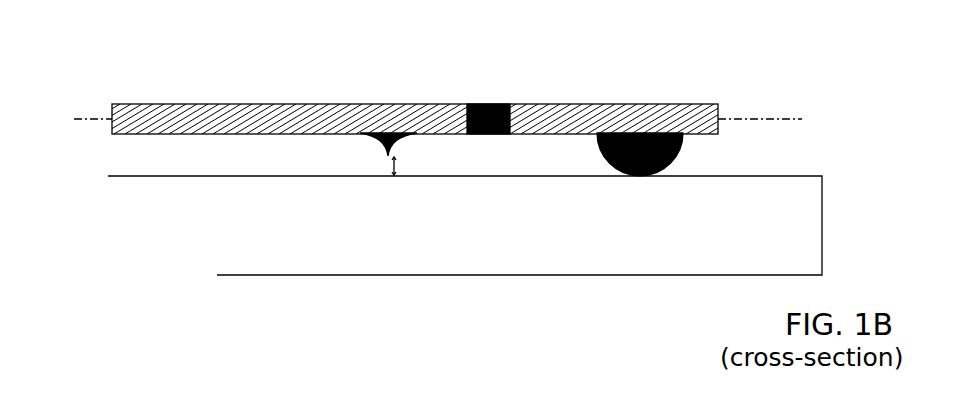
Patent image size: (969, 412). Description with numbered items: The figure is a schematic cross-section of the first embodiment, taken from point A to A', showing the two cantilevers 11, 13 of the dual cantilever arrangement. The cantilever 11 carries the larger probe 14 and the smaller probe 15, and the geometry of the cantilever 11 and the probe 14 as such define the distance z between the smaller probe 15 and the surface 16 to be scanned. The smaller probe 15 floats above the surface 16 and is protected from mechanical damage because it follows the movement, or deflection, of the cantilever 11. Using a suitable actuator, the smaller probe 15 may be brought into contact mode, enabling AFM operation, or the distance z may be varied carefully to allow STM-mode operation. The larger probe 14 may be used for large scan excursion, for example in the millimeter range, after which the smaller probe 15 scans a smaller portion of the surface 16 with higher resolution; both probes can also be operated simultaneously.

The cantilever 11 is at (548, 107).
The cantilever 13 is at (188, 120).
The probe 14 is at (638, 132).
The smaller probe 15 is at (385, 132).
The surface 16 is at (495, 243).
The section point A is at (438, 113).
The distance z is at (400, 165).